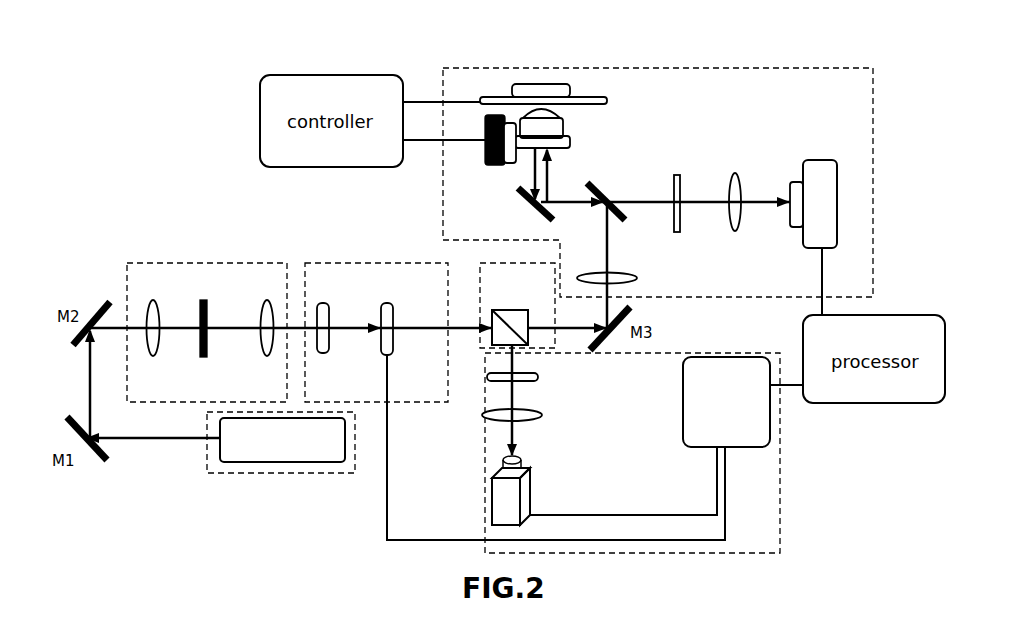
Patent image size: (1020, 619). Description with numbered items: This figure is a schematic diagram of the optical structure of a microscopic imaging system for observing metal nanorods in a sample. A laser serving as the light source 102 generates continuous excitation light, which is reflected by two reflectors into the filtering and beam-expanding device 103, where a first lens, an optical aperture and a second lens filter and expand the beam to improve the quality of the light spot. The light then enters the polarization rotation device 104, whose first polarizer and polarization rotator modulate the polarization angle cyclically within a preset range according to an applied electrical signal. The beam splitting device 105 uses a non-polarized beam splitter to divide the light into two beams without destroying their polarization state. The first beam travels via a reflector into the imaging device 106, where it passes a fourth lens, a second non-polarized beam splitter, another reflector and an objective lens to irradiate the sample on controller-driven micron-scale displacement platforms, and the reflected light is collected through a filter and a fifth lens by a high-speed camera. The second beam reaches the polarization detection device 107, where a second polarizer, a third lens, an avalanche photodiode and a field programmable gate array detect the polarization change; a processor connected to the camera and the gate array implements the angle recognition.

The light source 102 is at (253, 475).
The filtering and beam-expanding device 103 is at (166, 260).
The polarization rotation device 104 is at (347, 258).
The beam splitting device 105 is at (477, 281).
The imaging device 106 is at (466, 63).
The polarization detection device 107 is at (480, 456).